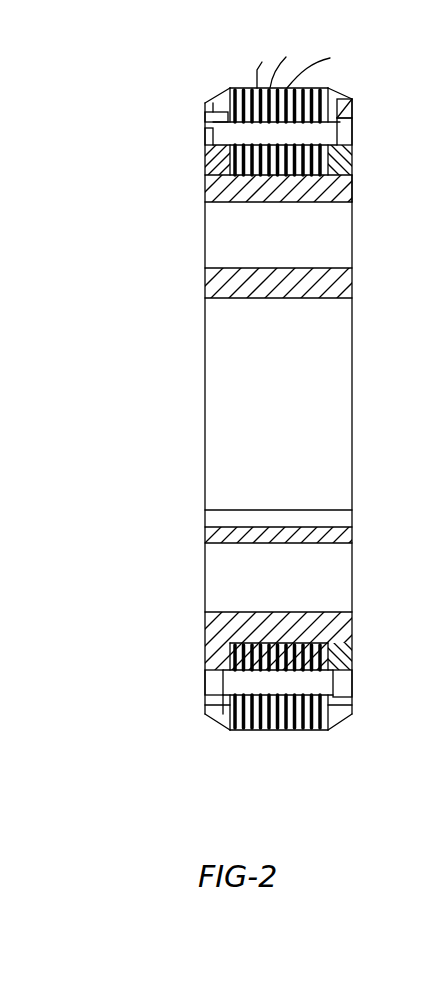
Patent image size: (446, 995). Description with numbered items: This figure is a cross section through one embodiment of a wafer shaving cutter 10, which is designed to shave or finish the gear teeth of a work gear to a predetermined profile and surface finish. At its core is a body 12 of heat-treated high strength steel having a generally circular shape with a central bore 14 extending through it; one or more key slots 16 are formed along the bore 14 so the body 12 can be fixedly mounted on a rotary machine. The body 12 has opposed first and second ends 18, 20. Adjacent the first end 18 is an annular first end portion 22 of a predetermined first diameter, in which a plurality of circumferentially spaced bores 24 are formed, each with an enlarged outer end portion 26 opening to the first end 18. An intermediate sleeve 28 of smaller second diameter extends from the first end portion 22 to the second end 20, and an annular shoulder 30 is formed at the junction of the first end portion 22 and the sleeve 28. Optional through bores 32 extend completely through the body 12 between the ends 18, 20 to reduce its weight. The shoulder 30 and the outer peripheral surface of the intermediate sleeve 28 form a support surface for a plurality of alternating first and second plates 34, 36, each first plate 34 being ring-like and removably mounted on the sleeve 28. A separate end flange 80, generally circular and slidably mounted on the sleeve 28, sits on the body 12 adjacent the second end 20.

The wafer shaving cutter 10 is at (384, 158).
The body 12 is at (197, 281).
The central bore 14 is at (228, 305).
The key slot 16 is at (233, 527).
The first end 18 is at (207, 193).
The second end 20 is at (352, 185).
The first end portion 22 is at (203, 106).
The bore 24 is at (207, 118).
The enlarged outer end portion 26 is at (205, 141).
The intermediate sleeve 28 is at (282, 628).
The annular shoulder 30 is at (228, 732).
The through bore 32 is at (318, 265).
The first plate 34 is at (255, 733).
The second plate 36 is at (268, 733).
The end flange 80 is at (338, 103).